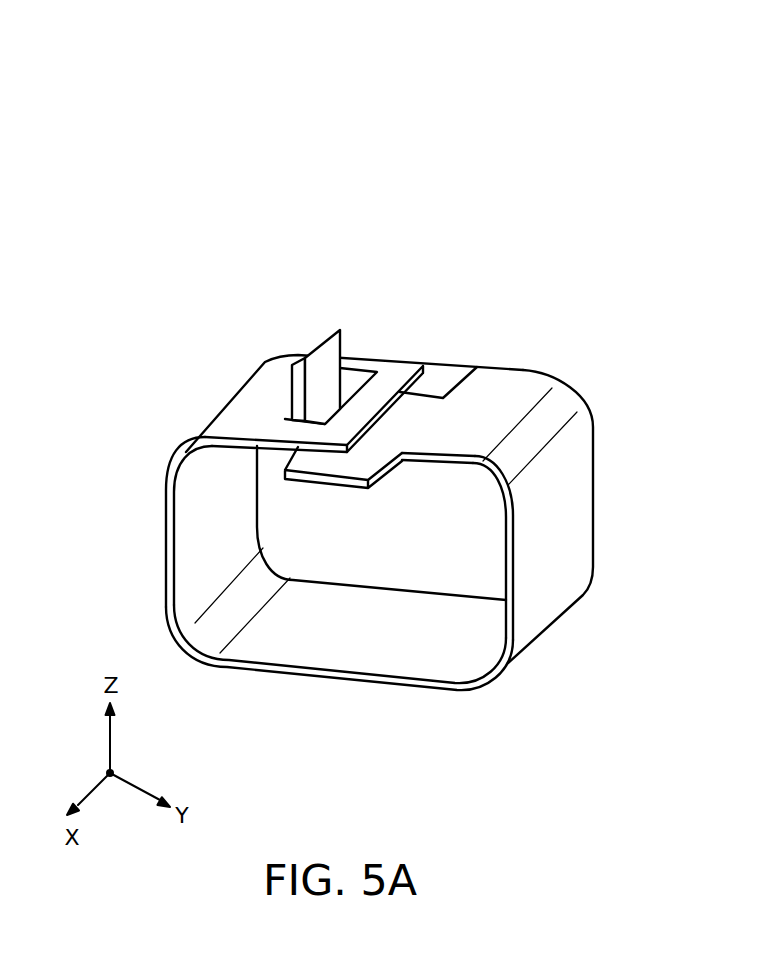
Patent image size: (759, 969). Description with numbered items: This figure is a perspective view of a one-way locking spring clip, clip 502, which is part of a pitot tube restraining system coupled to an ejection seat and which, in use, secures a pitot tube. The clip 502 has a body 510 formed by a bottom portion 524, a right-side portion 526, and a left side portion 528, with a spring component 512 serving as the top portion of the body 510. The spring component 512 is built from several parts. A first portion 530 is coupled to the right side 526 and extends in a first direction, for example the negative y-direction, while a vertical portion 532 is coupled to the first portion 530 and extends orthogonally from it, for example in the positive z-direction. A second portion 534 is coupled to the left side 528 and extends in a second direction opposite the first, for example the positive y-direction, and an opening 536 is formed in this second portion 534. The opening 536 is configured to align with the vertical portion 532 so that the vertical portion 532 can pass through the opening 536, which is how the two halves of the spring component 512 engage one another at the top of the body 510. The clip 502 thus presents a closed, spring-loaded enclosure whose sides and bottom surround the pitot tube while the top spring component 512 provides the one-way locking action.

The clip 502 is at (217, 195).
The body 510 is at (497, 731).
The spring component 512 is at (510, 285).
The bottom portion 524 is at (328, 675).
The right-side portion 526 is at (560, 498).
The left side portion 528 is at (177, 592).
The first portion 530 is at (498, 392).
The vertical portion 532 is at (323, 336).
The second portion 534 is at (282, 370).
The opening 536 is at (362, 354).